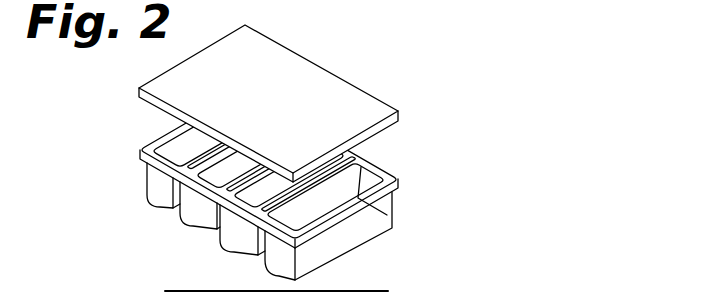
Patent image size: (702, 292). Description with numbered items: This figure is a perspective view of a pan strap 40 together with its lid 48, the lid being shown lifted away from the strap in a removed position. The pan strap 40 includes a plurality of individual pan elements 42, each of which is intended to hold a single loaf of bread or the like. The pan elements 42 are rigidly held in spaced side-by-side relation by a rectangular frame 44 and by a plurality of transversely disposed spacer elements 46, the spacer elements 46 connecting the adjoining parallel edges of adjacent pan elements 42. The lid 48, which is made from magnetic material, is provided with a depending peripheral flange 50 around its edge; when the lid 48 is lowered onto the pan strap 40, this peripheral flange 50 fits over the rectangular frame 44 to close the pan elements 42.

The pan strap 40 is at (189, 221).
The pan element 42 is at (348, 242).
The rectangular frame 44 is at (392, 172).
The spacer element 46 is at (268, 209).
The lid 48 is at (323, 82).
The peripheral flange 50 is at (399, 119).